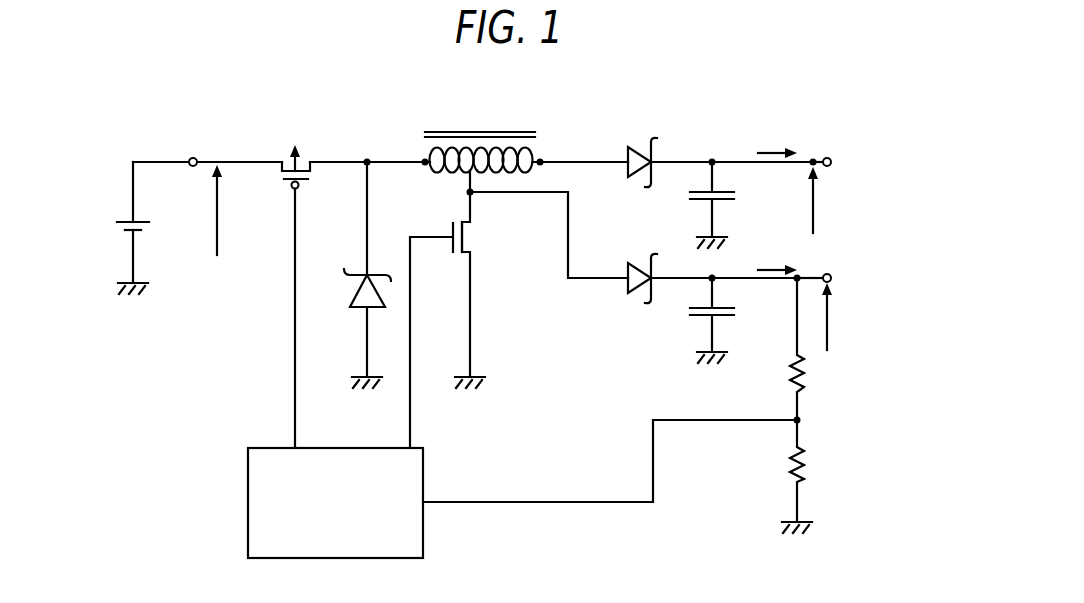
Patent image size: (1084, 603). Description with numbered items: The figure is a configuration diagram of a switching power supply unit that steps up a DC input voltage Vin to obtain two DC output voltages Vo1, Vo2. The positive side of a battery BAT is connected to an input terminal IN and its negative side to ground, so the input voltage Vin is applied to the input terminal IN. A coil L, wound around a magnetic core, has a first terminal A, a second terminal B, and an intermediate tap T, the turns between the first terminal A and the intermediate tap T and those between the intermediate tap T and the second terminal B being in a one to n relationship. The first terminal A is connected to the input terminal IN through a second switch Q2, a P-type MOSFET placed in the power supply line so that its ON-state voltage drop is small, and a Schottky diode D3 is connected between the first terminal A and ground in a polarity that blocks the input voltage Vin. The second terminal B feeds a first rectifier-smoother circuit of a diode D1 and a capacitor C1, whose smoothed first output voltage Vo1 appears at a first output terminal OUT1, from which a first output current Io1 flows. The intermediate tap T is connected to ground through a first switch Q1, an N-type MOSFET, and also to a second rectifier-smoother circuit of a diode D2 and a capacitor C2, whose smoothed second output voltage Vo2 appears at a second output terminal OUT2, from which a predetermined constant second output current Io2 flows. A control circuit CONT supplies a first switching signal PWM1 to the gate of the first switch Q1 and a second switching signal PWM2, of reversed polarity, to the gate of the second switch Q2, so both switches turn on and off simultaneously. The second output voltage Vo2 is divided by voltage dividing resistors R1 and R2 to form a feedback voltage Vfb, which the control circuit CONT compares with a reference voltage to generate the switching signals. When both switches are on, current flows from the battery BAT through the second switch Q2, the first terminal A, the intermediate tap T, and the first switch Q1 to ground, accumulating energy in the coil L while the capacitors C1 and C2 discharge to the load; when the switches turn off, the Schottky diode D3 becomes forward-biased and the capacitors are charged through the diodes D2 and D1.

The battery BAT is at (148, 245).
The input terminal IN is at (192, 150).
The DC input voltage Vin is at (232, 210).
The second switch Q2 is at (296, 286).
The second switching signal PWM2 is at (251, 435).
The first switching signal PWM1 is at (370, 435).
The Schottky diode D3 is at (354, 275).
The coil L is at (482, 141).
The first terminal A is at (417, 151).
The second terminal B is at (549, 151).
The intermediate tap T is at (462, 185).
The first switch Q1 is at (476, 237).
The control circuit CONT is at (423, 470).
The feedback voltage Vfb is at (610, 461).
The diode D1 is at (643, 149).
The diode D2 is at (712, 266).
The capacitor C1 is at (728, 205).
The capacitor C2 is at (728, 320).
The first output current Io1 is at (777, 142).
The second output current Io2 is at (777, 259).
The first output terminal OUT1 is at (850, 162).
The second output terminal OUT2 is at (842, 278).
The first DC output voltage Vo1 is at (830, 200).
The second DC output voltage Vo2 is at (845, 316).
The voltage dividing resistor R1 is at (778, 349).
The voltage dividing resistor R2 is at (782, 476).